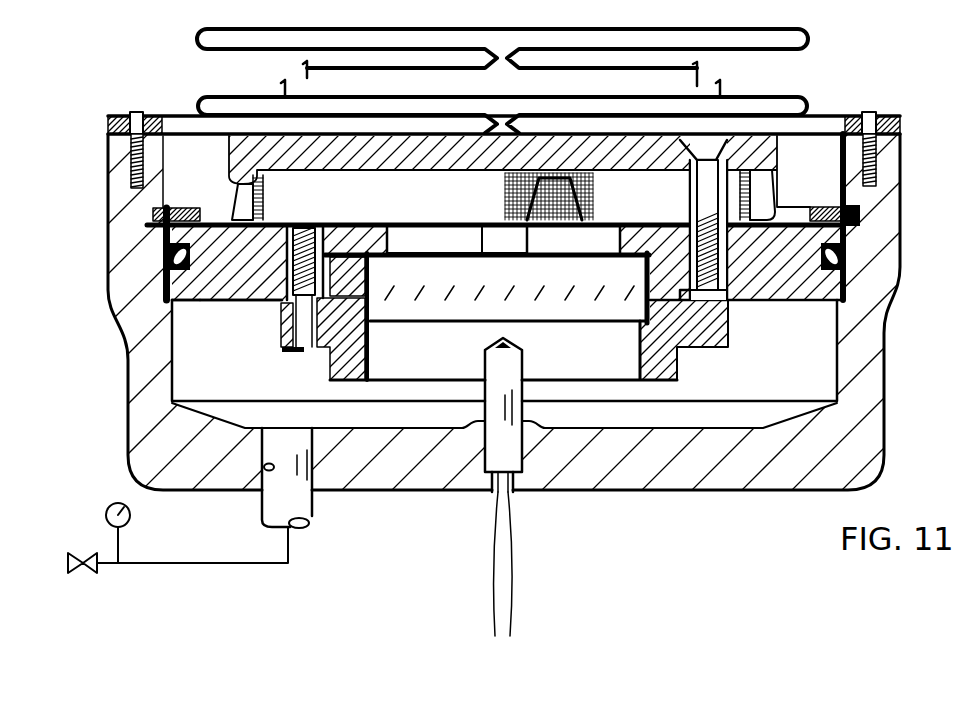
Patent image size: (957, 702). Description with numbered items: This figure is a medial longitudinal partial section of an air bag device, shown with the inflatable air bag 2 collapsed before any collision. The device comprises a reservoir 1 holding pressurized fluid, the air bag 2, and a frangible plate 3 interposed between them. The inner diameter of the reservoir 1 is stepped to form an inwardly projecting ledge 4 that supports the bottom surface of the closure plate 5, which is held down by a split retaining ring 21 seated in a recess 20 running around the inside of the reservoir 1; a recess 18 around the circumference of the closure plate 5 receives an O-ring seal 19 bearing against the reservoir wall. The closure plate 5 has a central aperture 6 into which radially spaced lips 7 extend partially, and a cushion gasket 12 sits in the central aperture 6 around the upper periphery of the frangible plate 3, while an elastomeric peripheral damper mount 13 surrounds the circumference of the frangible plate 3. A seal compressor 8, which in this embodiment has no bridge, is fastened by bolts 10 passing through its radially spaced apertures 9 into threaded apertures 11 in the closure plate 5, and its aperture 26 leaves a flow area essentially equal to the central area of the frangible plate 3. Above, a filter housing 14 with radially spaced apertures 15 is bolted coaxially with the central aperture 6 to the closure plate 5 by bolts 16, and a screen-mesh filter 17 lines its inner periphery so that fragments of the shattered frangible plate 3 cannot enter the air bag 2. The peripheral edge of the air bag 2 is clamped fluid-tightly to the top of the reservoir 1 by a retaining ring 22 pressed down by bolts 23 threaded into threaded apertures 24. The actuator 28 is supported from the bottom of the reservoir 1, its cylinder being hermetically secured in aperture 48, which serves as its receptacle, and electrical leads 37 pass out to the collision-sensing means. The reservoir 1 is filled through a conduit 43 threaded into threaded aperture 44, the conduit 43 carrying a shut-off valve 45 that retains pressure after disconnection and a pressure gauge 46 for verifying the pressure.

The reservoir 1 is at (884, 455).
The inflatable air bag 2 is at (655, 27).
The frangible plate 3 is at (415, 318).
The ledge 4 is at (172, 303).
The closure plate 5 is at (215, 303).
The central aperture 6 is at (573, 241).
The lips 7 is at (396, 252).
The seal compressor 8 is at (718, 350).
The apertures 9 is at (288, 352).
The bolts 10 is at (313, 353).
The threaded apertures 11 is at (293, 250).
The cushion gasket 12 is at (440, 246).
The peripheral damper mount 13 is at (636, 280).
The filter housing 14 is at (780, 172).
The apertures 15 is at (245, 208).
The bolts 16 is at (712, 250).
The filter 17 is at (265, 202).
The recess 18 is at (165, 268).
The O-ring seal 19 is at (162, 246).
The recess 20 is at (150, 228).
The split retaining ring 21 is at (150, 203).
The retaining ring 22 is at (108, 130).
The bolts 23 is at (130, 113).
The threaded apertures 24 is at (130, 170).
The aperture 26 is at (503, 350).
The actuator 28 is at (530, 432).
The electrical leads 37 is at (497, 566).
The conduit 43 is at (318, 520).
The threaded aperture 44 is at (264, 467).
The shut-off valve 45 is at (78, 572).
The pressure gauge 46 is at (128, 522).
The aperture 48 is at (484, 448).